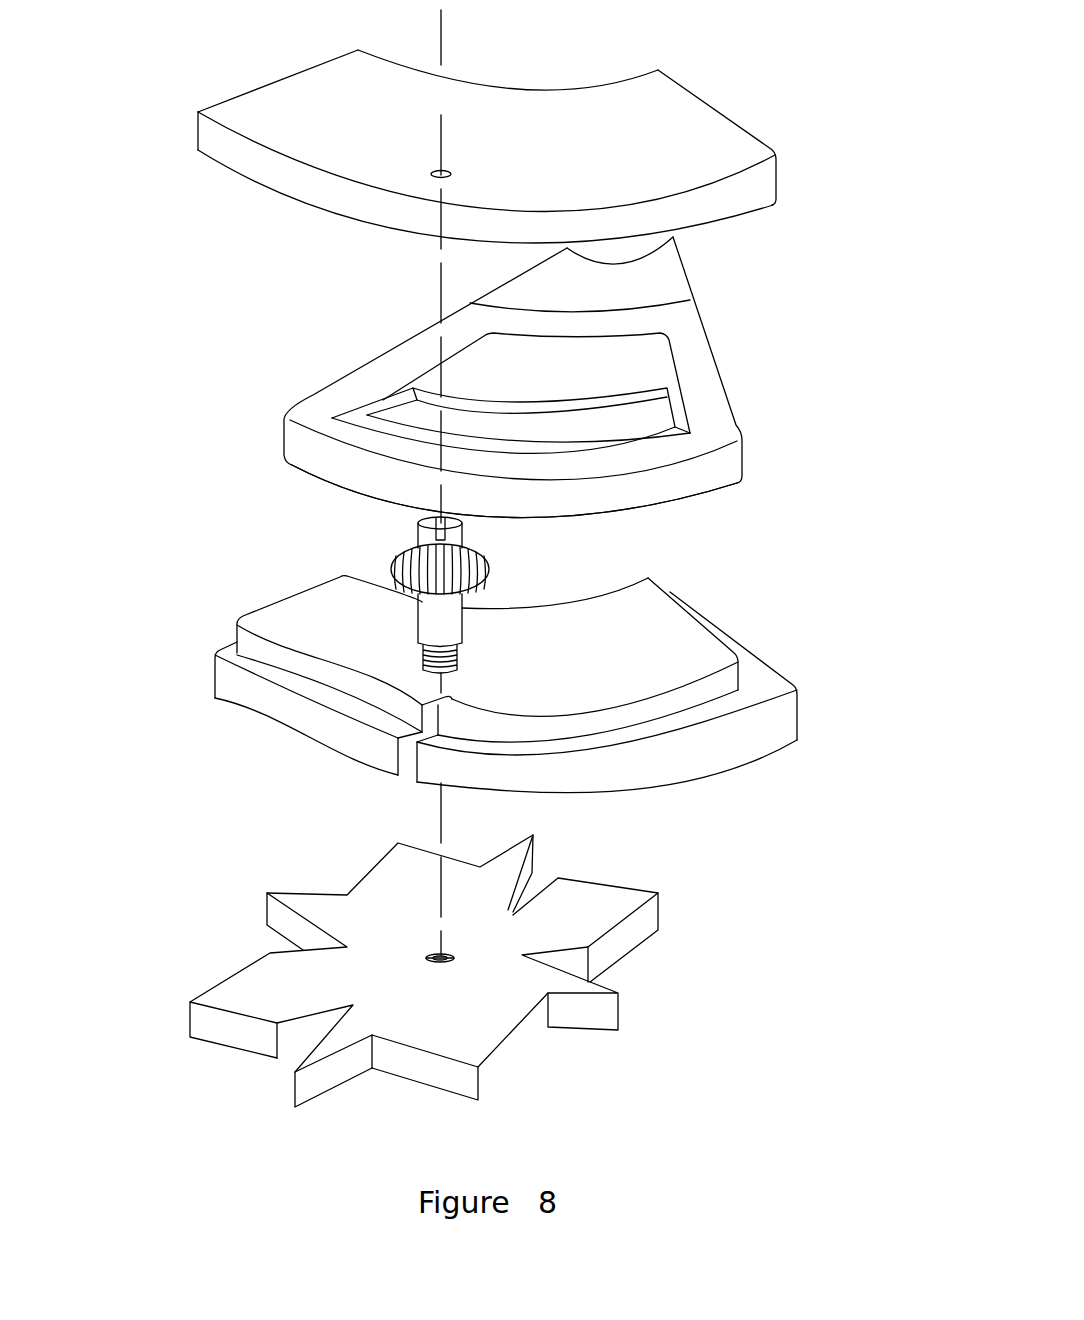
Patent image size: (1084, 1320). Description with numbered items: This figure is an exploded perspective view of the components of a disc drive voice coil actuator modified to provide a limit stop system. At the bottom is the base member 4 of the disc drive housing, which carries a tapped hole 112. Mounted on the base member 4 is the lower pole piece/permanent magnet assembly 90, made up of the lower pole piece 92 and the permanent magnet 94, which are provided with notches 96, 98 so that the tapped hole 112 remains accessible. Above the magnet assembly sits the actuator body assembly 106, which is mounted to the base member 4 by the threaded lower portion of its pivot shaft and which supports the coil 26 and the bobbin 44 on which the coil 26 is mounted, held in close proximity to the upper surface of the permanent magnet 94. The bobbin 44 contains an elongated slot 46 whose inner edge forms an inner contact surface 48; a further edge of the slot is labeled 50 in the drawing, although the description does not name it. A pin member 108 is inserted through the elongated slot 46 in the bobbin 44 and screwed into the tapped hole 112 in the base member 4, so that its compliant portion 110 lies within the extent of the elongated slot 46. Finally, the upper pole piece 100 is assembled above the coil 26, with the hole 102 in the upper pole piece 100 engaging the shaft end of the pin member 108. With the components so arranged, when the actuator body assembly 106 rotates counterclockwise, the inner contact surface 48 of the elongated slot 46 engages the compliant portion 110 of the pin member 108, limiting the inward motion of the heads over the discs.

The base member 4 is at (600, 903).
The coil 26 is at (313, 458).
The bobbin 44 is at (653, 358).
The elongated slot 46 is at (632, 420).
The inner contact surface 48 is at (368, 400).
The inner ledge edge 50 is at (700, 408).
The lower pole piece/permanent magnet assembly 90 is at (549, 662).
The lower pole piece 92 is at (767, 695).
The permanent magnet 94 is at (678, 637).
The notch 96 is at (455, 697).
The notch 98 is at (398, 758).
The upper pole piece 100 is at (243, 157).
The hole 102 is at (451, 171).
The actuator body assembly 106 is at (498, 347).
The pin member 108 is at (467, 595).
The compliant portion 110 is at (392, 560).
The tapped hole 112 is at (433, 961).